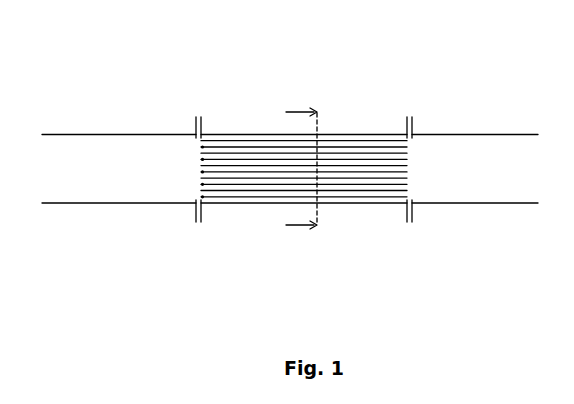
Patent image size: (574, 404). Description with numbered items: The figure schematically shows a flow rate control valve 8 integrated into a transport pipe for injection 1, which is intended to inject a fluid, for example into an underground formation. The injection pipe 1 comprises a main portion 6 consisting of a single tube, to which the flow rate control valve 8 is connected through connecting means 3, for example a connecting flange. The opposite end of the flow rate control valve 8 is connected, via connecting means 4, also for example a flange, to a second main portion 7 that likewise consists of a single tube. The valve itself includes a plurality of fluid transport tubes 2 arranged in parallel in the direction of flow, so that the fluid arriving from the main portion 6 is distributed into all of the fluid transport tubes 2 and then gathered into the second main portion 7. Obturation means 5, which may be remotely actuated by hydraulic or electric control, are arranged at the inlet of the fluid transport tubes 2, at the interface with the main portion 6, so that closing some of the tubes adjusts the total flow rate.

The injection pipe 1 is at (437, 87).
The fluid transport tubes 2 is at (363, 143).
The connecting means 3 is at (202, 125).
The connecting means 4 is at (396, 194).
The obturation means 5 is at (200, 171).
The main portion 6 is at (88, 155).
The second main portion 7 is at (497, 158).
The flow rate control valve 8 is at (293, 198).